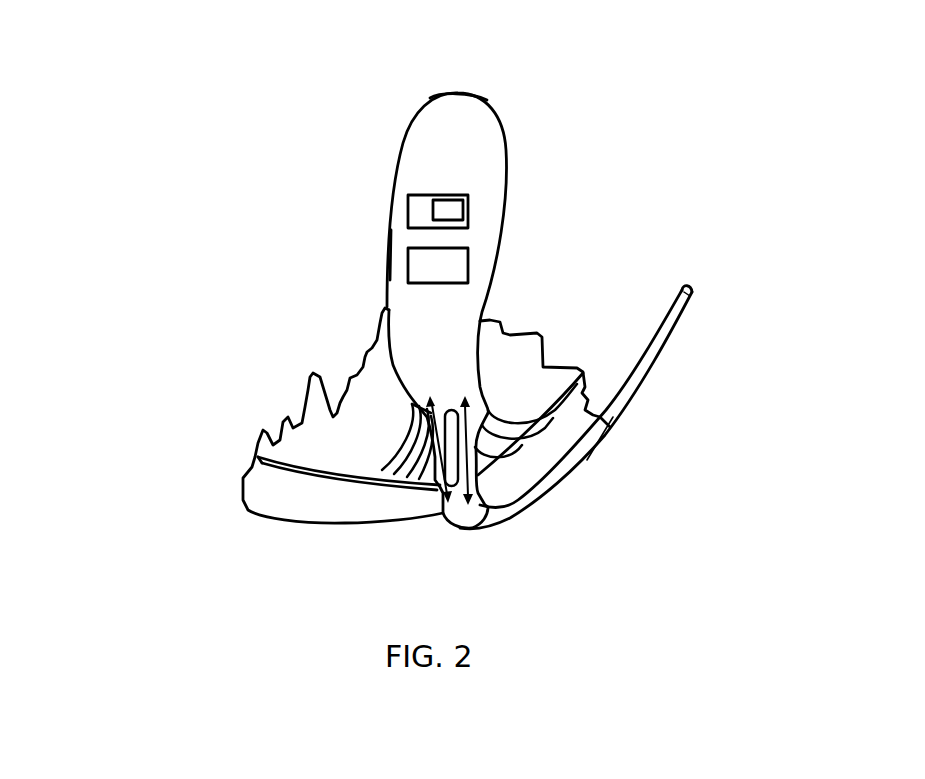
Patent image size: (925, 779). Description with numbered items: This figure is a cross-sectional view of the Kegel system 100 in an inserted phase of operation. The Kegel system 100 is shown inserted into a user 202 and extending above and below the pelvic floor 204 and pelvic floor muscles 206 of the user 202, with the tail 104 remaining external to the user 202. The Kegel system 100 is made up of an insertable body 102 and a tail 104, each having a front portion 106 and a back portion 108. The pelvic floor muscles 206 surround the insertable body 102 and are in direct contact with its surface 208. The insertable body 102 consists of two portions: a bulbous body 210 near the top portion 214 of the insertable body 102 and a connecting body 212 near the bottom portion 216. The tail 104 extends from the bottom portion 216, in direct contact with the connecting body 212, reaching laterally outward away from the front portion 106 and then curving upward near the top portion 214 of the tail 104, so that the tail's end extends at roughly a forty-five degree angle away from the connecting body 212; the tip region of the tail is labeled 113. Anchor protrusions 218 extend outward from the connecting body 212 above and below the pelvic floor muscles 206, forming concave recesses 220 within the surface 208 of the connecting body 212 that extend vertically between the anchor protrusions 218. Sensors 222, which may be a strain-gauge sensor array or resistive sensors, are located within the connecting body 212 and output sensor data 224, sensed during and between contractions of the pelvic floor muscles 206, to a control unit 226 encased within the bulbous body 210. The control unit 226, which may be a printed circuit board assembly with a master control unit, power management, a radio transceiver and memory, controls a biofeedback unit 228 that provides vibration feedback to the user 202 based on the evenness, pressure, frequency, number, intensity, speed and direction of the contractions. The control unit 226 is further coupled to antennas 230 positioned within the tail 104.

The Kegel system 100 is at (228, 42).
The insertable body 102 is at (463, 100).
The tail 104 is at (627, 401).
The front portion 106 is at (514, 150).
The back portion 108 is at (406, 126).
The strap tip 113 is at (688, 291).
The user 202 is at (327, 538).
The pelvic floor 204 is at (285, 470).
The pelvic floor muscles 206 is at (407, 421).
The surface 208 is at (391, 255).
The bulbous body 210 is at (459, 142).
The connecting body 212 is at (416, 452).
The top portion 214 is at (474, 82).
The bottom portion 216 is at (464, 548).
The anchor protrusions 218 is at (411, 403).
The concave recesses 220 is at (413, 430).
The sensors 222 is at (440, 476).
The sensor data 224 is at (447, 210).
The control unit 226 is at (423, 202).
The biofeedback unit 228 is at (423, 260).
The antennas 230 is at (607, 441).